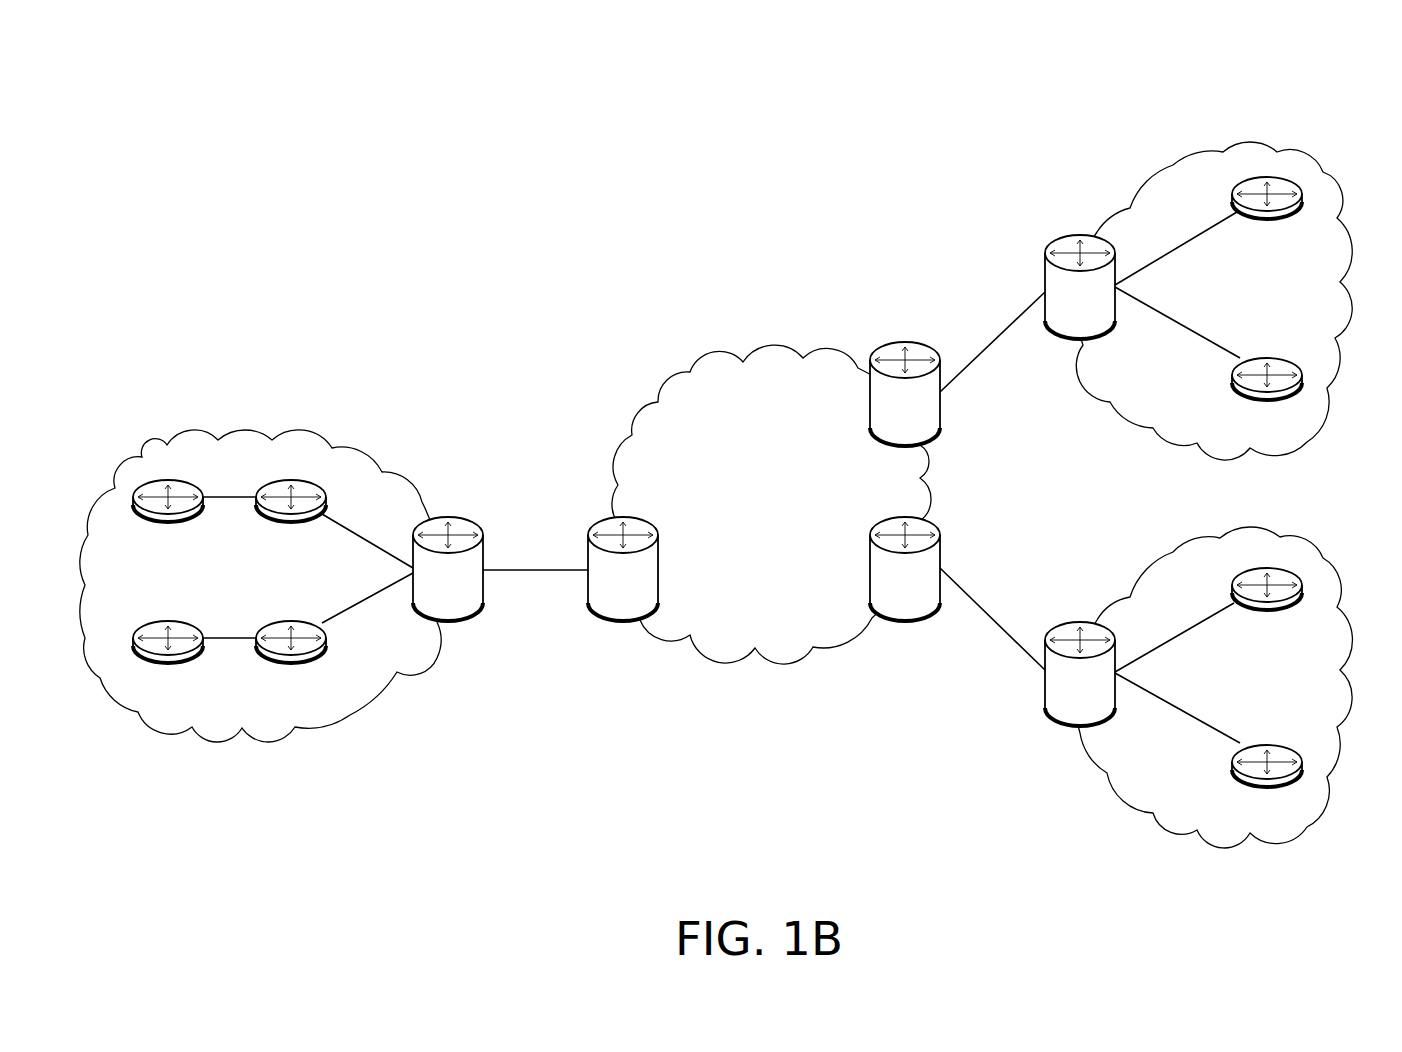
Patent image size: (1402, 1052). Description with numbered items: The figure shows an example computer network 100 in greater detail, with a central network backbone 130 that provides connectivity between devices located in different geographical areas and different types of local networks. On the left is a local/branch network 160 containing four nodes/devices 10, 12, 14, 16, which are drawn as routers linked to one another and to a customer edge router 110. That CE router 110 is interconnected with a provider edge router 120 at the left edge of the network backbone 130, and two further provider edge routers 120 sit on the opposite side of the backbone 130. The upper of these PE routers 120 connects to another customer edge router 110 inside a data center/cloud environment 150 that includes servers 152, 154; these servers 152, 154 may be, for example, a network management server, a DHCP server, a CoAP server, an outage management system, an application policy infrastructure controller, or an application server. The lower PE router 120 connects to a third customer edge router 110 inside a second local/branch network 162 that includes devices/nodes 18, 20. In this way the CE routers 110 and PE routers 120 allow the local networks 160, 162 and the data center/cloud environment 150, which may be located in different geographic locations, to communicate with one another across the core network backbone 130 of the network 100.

The computer network 100 is at (1307, 85).
The node/device 10 is at (168, 520).
The node/device 12 is at (291, 520).
The node/device 14 is at (168, 661).
The node/device 16 is at (291, 661).
The device/node 18 is at (1267, 784).
The device/node 20 is at (1267, 608).
The customer edge (CE) router 110 is at (432, 605).
The provider edge (PE) router 120 is at (607, 605).
The network backbone 130 is at (750, 526).
The data center/cloud environment 150 is at (1177, 167).
The server 152 is at (1267, 218).
The server 154 is at (1267, 397).
The local/branch network 160 is at (305, 425).
The local/branch network 162 is at (1095, 770).